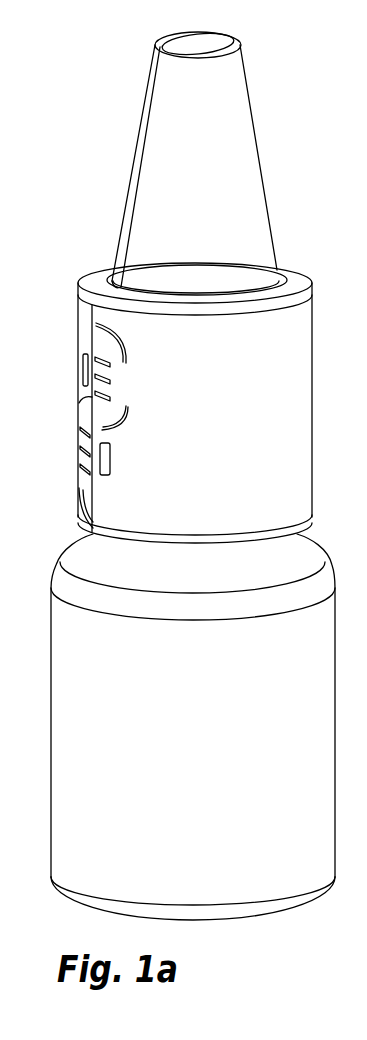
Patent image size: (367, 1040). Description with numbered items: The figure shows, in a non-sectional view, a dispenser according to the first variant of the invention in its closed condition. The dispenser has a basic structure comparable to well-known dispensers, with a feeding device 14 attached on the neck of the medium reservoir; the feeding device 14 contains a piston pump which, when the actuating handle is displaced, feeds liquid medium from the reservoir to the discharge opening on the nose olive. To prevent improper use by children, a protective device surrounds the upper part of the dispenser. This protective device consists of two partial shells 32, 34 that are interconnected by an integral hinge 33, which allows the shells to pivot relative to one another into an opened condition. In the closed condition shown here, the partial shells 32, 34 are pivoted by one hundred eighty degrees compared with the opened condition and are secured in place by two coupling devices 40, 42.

The feeding device 14 is at (209, 697).
The integral hinge 33 is at (307, 278).
The partial shell 32 is at (220, 162).
The partial shell 34 is at (152, 64).
The coupling device 42 is at (68, 350).
The coupling device 40 is at (68, 422).